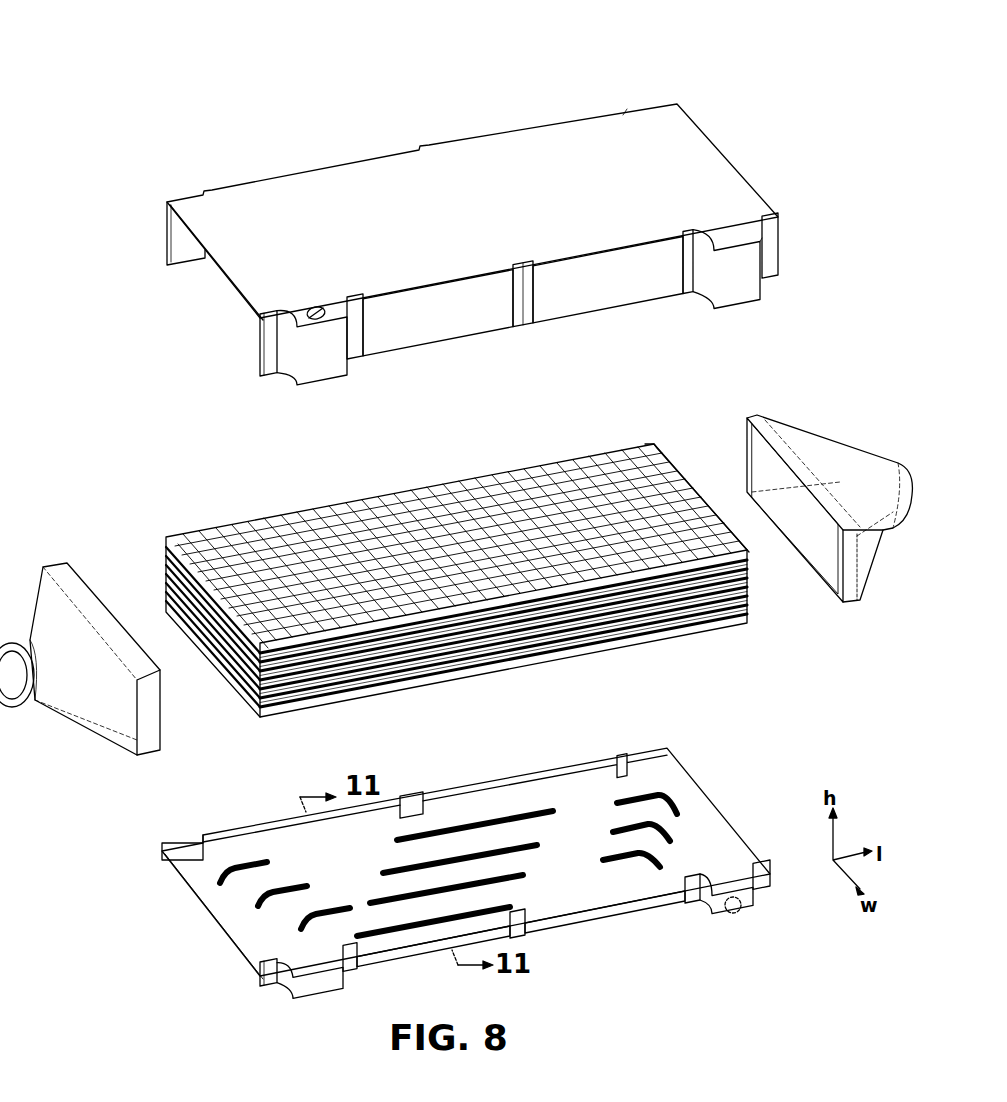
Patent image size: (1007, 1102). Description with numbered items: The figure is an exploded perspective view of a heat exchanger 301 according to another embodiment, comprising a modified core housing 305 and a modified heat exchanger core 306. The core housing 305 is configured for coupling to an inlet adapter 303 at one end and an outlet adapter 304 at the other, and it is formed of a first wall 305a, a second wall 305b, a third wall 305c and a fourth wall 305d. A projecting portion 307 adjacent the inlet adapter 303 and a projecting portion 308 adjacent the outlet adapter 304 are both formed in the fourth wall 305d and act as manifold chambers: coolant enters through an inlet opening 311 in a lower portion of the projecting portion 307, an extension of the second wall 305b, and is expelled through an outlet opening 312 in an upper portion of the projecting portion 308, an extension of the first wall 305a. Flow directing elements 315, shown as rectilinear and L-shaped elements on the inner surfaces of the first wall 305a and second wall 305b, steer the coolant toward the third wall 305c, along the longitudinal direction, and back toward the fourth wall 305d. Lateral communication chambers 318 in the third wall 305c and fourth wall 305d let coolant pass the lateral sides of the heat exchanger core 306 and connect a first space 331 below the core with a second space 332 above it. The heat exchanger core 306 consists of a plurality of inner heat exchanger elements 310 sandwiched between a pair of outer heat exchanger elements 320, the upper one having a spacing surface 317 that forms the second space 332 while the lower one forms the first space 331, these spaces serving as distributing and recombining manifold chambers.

The heat exchanger 301 is at (82, 86).
The inlet adapter 303 is at (62, 566).
The outlet adapter 304 is at (812, 440).
The core housing 305 is at (454, 212).
The first wall 305a is at (245, 218).
The second wall 305b is at (443, 863).
The third wall 305c is at (172, 236).
The fourth wall 305d is at (264, 355).
The heat exchanger core 306 is at (484, 553).
The projecting portion 307 is at (320, 366).
The projecting portion 308 is at (742, 276).
The inner heat exchanger elements 310 is at (750, 566).
The inlet opening 311 is at (736, 896).
The outlet opening 312 is at (316, 305).
The flow directing elements 315 is at (447, 828).
The spacing surface 317 is at (175, 540).
The lateral communication chambers 318 is at (583, 122).
The outer heat exchanger elements 320 is at (660, 448).
The first space 331 is at (236, 852).
The second space 332 is at (318, 518).